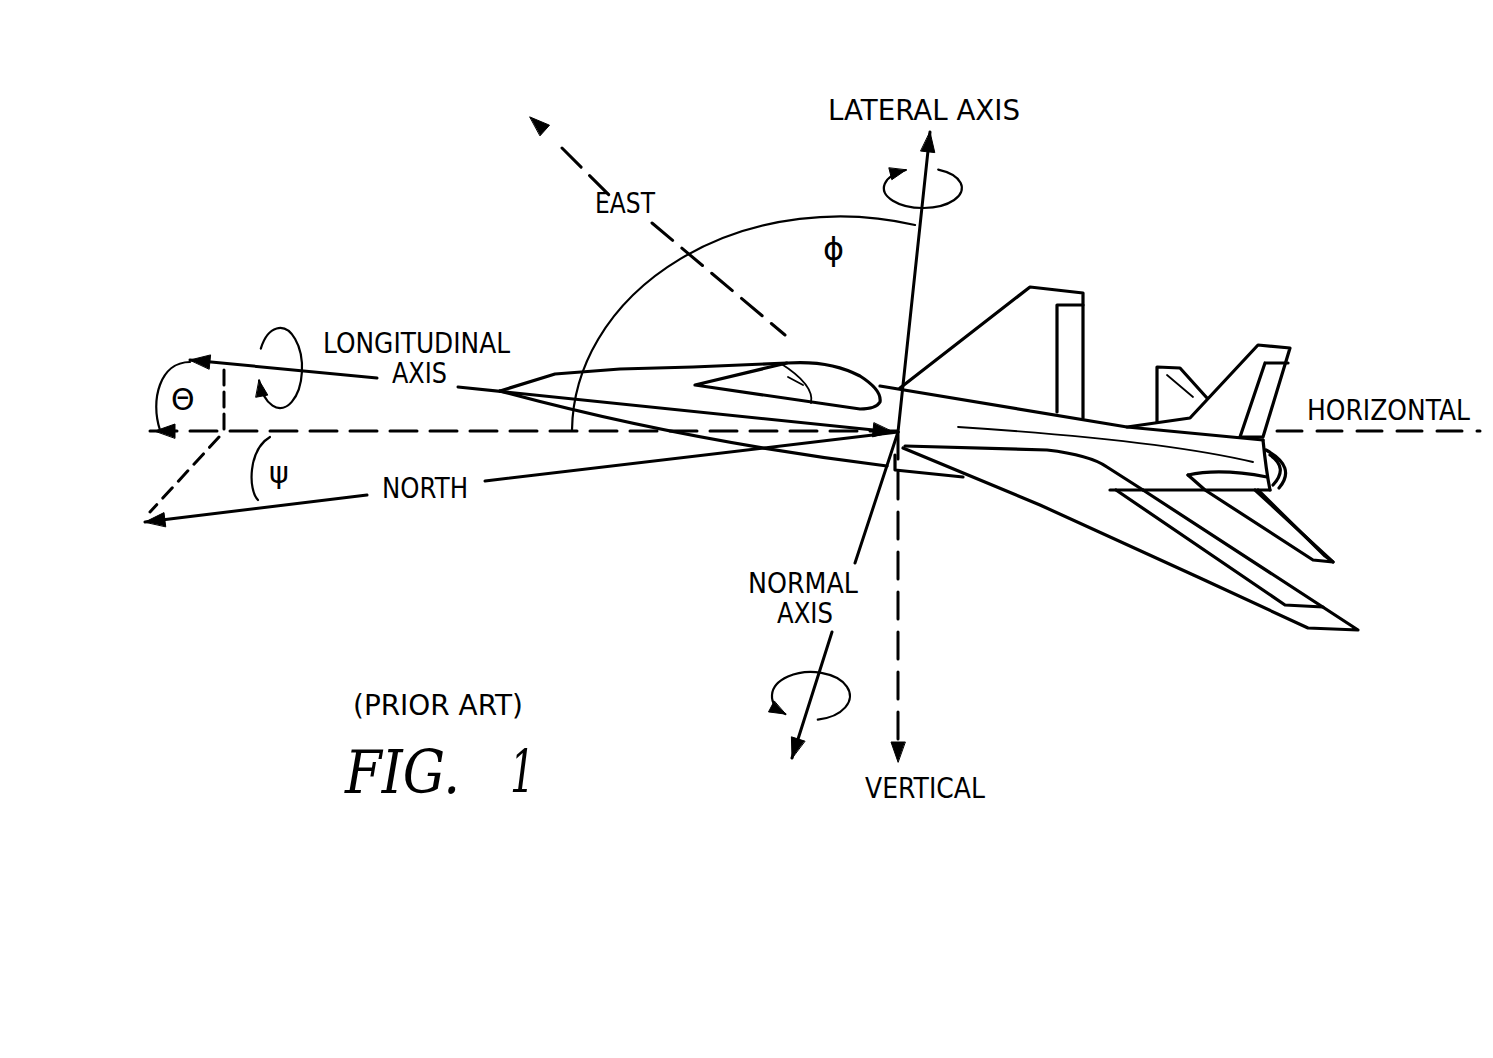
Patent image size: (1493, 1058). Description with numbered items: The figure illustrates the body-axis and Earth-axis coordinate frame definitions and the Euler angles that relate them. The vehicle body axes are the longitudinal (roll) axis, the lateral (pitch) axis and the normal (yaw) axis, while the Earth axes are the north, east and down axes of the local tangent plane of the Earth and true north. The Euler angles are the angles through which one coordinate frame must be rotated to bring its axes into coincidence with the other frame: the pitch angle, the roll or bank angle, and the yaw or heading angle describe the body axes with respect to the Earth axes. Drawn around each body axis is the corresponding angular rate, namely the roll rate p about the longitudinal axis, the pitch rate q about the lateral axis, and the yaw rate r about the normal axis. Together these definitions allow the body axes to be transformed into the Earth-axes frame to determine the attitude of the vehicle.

The roll rate p is at (269, 368).
The pitch rate q is at (936, 188).
The yaw rate r is at (808, 684).